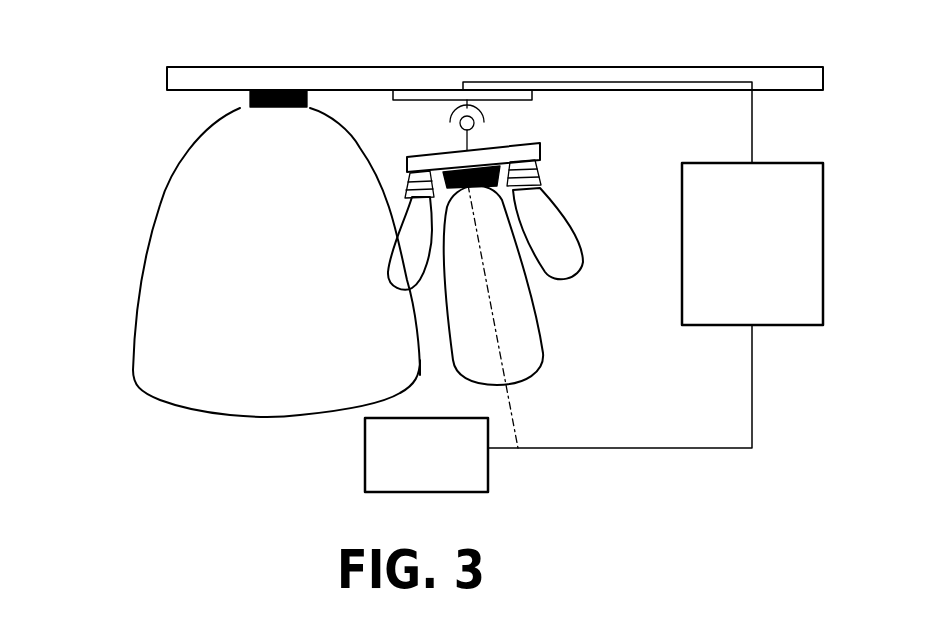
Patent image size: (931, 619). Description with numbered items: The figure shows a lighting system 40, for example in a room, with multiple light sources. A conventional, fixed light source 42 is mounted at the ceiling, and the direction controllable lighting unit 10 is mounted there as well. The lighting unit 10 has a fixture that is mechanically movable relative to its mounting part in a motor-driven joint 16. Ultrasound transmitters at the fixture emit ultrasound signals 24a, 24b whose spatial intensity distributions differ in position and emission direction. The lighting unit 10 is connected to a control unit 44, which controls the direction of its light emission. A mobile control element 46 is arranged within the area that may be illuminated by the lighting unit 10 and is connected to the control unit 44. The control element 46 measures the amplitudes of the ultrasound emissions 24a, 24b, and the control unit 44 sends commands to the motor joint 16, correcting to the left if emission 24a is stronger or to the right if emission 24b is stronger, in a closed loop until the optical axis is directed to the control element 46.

The lighting system 40 is at (108, 137).
The fixed light source 42 is at (281, 90).
The motor-driven joint 16 is at (486, 118).
The direction controllable lighting unit 10 is at (543, 151).
The ultrasound emission 24a is at (390, 258).
The ultrasound emission 24b is at (568, 222).
The control unit 44 is at (766, 259).
The mobile control element 46 is at (365, 469).